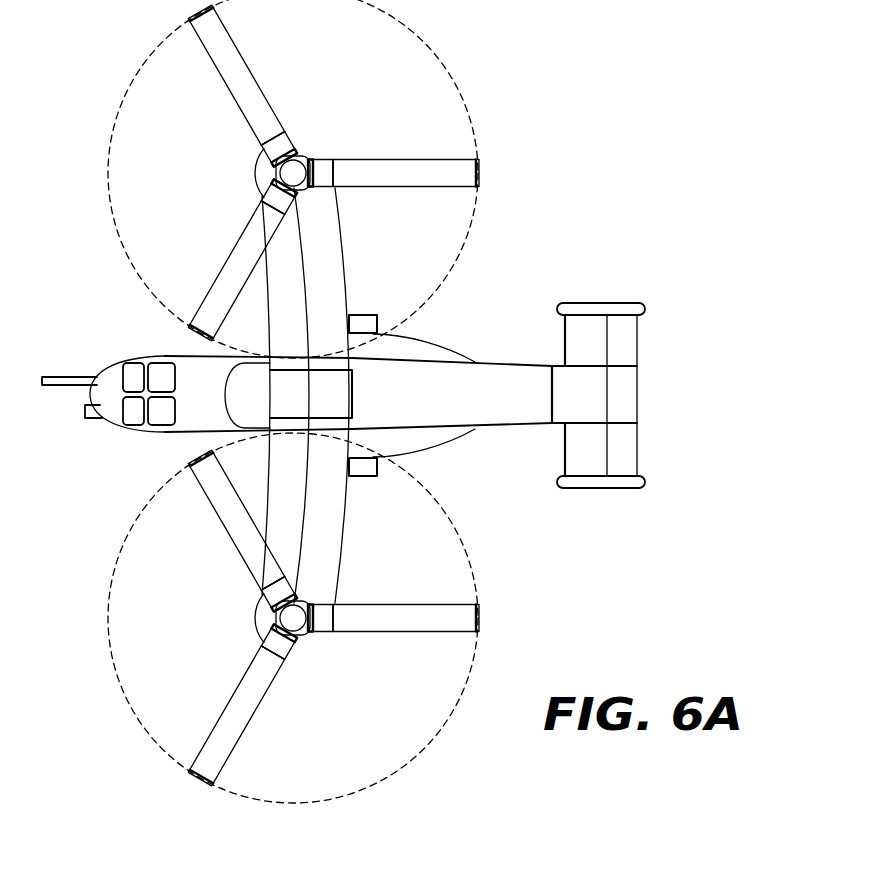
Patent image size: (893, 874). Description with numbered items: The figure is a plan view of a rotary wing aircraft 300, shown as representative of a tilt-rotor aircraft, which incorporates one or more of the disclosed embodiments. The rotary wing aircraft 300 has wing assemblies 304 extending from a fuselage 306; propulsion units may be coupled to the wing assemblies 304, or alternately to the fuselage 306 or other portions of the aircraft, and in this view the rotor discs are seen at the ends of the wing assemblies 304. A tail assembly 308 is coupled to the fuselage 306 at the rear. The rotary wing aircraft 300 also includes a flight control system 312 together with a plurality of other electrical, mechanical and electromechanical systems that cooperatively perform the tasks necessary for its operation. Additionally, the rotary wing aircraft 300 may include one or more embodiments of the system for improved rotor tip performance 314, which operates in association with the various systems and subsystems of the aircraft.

The rotary wing aircraft 300 is at (692, 73).
The wing assemblies 304 is at (345, 263).
The fuselage 306 is at (445, 348).
The tail assembly 308 is at (674, 372).
The flight control system 312 is at (98, 456).
The system for improved rotor tip performance 314 is at (480, 615).